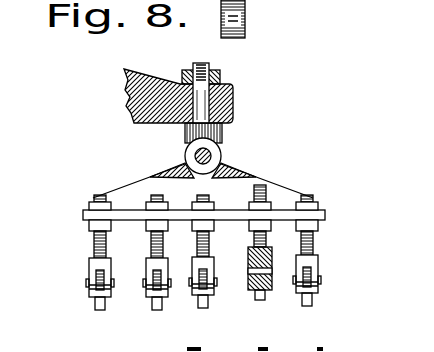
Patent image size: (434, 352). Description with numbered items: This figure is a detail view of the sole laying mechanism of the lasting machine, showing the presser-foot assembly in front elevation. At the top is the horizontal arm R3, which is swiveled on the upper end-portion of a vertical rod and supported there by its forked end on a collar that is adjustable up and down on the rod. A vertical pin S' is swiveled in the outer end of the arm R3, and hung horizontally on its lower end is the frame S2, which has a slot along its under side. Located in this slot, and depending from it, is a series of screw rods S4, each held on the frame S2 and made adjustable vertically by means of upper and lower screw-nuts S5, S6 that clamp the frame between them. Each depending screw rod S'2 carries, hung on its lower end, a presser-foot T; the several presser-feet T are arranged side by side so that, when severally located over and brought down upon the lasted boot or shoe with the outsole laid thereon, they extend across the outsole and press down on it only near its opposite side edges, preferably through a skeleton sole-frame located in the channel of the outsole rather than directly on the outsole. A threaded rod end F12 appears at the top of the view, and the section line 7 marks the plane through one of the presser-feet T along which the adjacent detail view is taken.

The threaded rod end F12 is at (246, 4).
The horizontal arm R3 is at (228, 90).
The center bolt S' is at (210, 85).
The frame S2 is at (163, 170).
The screw rods S4 is at (333, 183).
The upper screw-nuts S5 is at (352, 203).
The lower screw-nuts S6 is at (352, 225).
The threaded studs S'2 is at (203, 241).
The presser-foot T is at (281, 300).
The section line 7- 7 is at (259, 197).